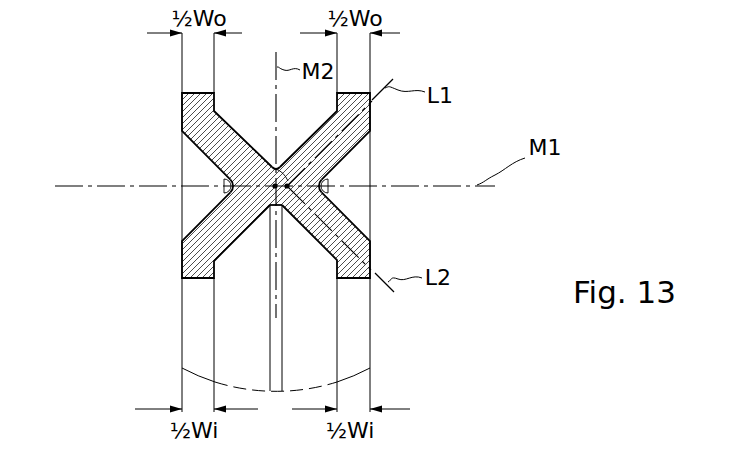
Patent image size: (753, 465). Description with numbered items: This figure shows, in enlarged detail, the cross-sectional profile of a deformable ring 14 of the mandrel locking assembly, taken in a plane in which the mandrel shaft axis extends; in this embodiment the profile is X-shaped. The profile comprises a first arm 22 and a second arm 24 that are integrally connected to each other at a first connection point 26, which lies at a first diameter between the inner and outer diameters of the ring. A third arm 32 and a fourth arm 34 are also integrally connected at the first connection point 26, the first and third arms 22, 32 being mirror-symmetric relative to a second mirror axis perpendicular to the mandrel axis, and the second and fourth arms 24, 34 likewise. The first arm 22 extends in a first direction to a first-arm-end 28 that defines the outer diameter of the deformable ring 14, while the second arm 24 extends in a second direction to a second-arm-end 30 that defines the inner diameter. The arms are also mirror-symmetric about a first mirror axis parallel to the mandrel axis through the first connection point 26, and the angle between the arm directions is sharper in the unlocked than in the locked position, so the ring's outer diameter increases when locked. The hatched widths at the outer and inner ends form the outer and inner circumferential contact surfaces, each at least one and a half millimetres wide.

The deformable ring 14 is at (392, 347).
The first arm 22 is at (335, 147).
The second arm 24 is at (336, 222).
The first connection point 26 is at (276, 167).
The first-arm-end 28 is at (355, 92).
The second-arm-end 30 is at (356, 282).
The third arm 32 is at (213, 148).
The fourth arm 34 is at (213, 221).